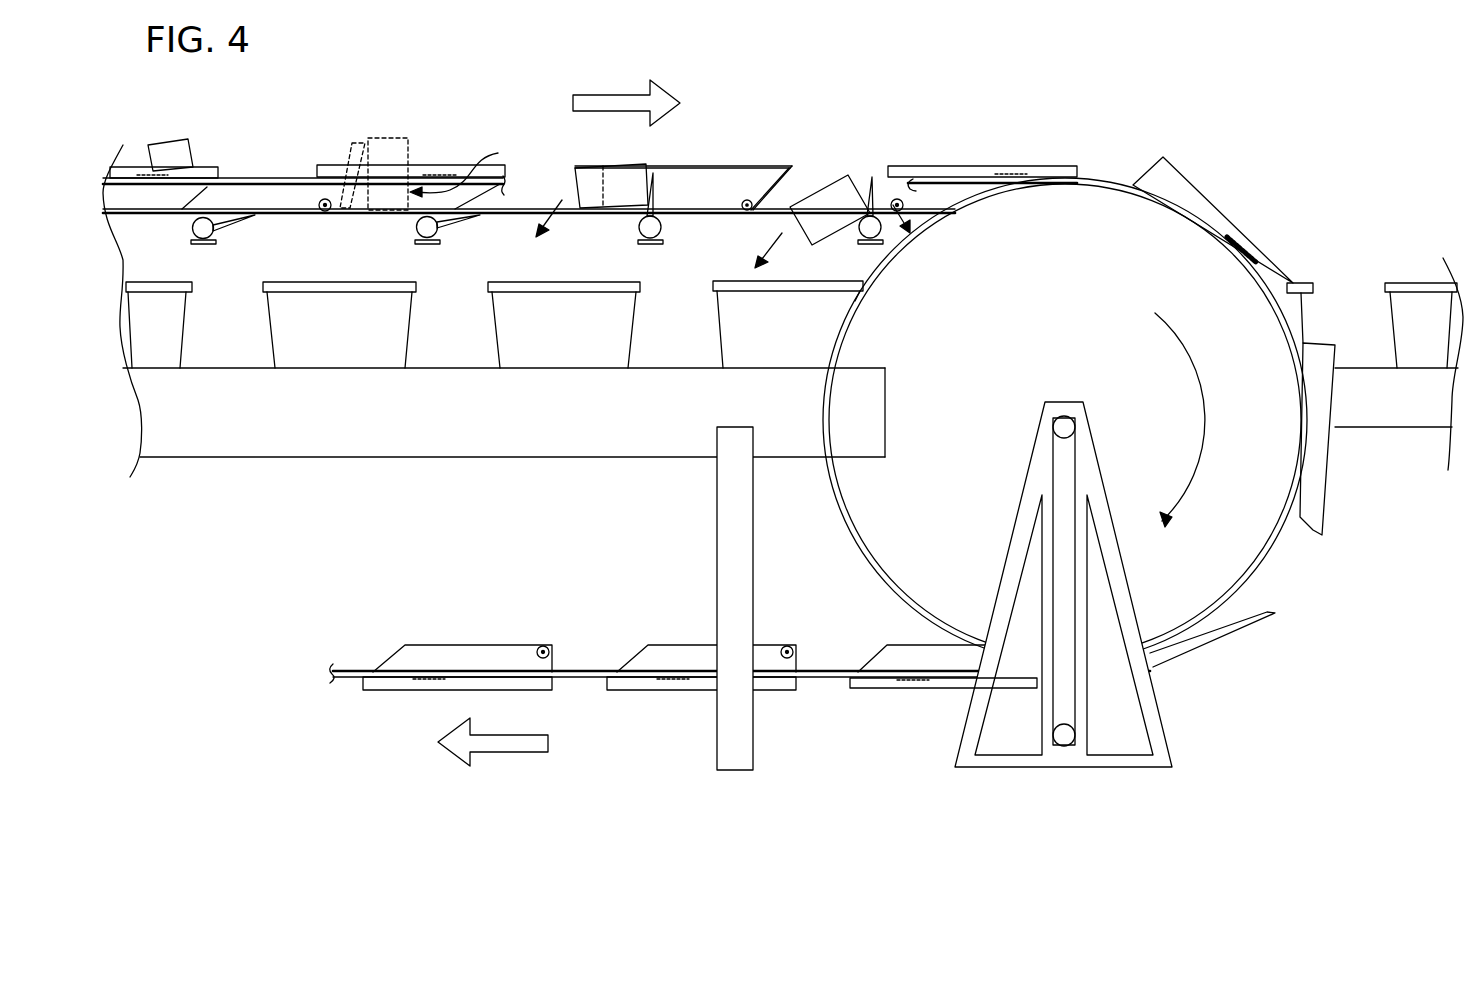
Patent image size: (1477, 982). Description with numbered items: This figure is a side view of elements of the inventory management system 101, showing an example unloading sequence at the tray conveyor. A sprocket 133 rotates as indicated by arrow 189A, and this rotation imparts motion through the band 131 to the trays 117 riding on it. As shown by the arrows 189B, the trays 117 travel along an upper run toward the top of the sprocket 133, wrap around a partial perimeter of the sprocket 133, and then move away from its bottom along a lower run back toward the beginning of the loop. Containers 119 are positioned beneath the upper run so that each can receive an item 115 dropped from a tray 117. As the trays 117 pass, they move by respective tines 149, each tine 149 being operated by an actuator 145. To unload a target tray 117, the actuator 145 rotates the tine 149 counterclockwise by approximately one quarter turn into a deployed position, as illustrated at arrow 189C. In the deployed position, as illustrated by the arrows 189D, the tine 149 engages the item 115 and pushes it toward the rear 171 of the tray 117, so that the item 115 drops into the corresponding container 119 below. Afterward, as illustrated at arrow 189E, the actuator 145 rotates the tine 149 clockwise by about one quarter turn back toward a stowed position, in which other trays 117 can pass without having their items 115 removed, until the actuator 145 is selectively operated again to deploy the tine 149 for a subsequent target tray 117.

The inventory management system 101 is at (1036, 88).
The item 115 is at (648, 162).
The tray 117 is at (442, 163).
The container 119 is at (580, 328).
The band 131 is at (1100, 176).
The sprocket 133 is at (978, 482).
The actuator 145 is at (415, 226).
The tine 149 is at (233, 229).
The rear of the tray 171 is at (583, 162).
The arrow indicating sprocket rotation 189A is at (1160, 350).
The arrows indicating tray travel 189B is at (598, 95).
The arrow indicating tine deployment 189C is at (482, 170).
The arrows indicating item movement 189D is at (563, 213).
The arrow indicating tine stowing 189E is at (887, 200).